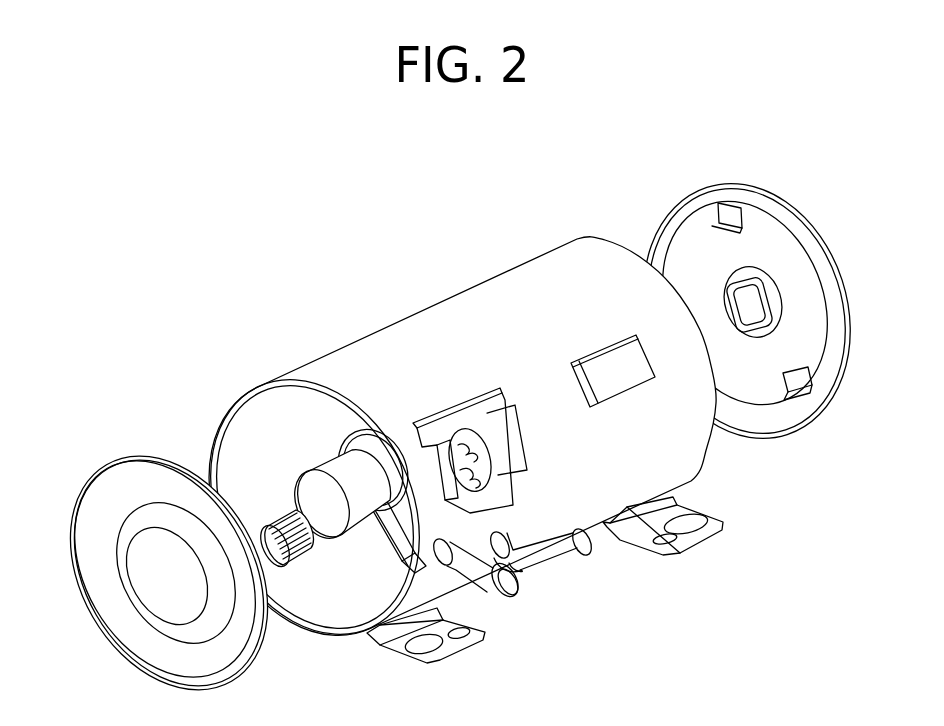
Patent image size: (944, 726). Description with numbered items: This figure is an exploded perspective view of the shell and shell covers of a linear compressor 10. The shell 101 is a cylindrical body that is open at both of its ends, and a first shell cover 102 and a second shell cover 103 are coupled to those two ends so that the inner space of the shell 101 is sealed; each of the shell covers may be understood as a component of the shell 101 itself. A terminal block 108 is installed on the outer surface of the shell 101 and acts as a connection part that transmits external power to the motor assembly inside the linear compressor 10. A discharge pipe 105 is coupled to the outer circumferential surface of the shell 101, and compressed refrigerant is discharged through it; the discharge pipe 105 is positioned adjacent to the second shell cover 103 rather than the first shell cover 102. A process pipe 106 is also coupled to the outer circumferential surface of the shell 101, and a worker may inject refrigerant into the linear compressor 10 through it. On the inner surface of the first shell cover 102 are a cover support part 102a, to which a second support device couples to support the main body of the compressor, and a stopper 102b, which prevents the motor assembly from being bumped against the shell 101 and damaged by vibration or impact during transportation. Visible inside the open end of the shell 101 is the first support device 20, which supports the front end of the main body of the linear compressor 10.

The linear compressor 10 is at (300, 330).
The first support device 20 is at (286, 471).
The shell 101 is at (368, 348).
The first shell cover 102 is at (810, 236).
The cover support part 102a is at (768, 311).
The stopper 102b is at (727, 200).
The second shell cover 103 is at (86, 539).
The discharge pipe 105 is at (547, 560).
The process pipe 106 is at (487, 590).
The terminal block 108 is at (433, 420).